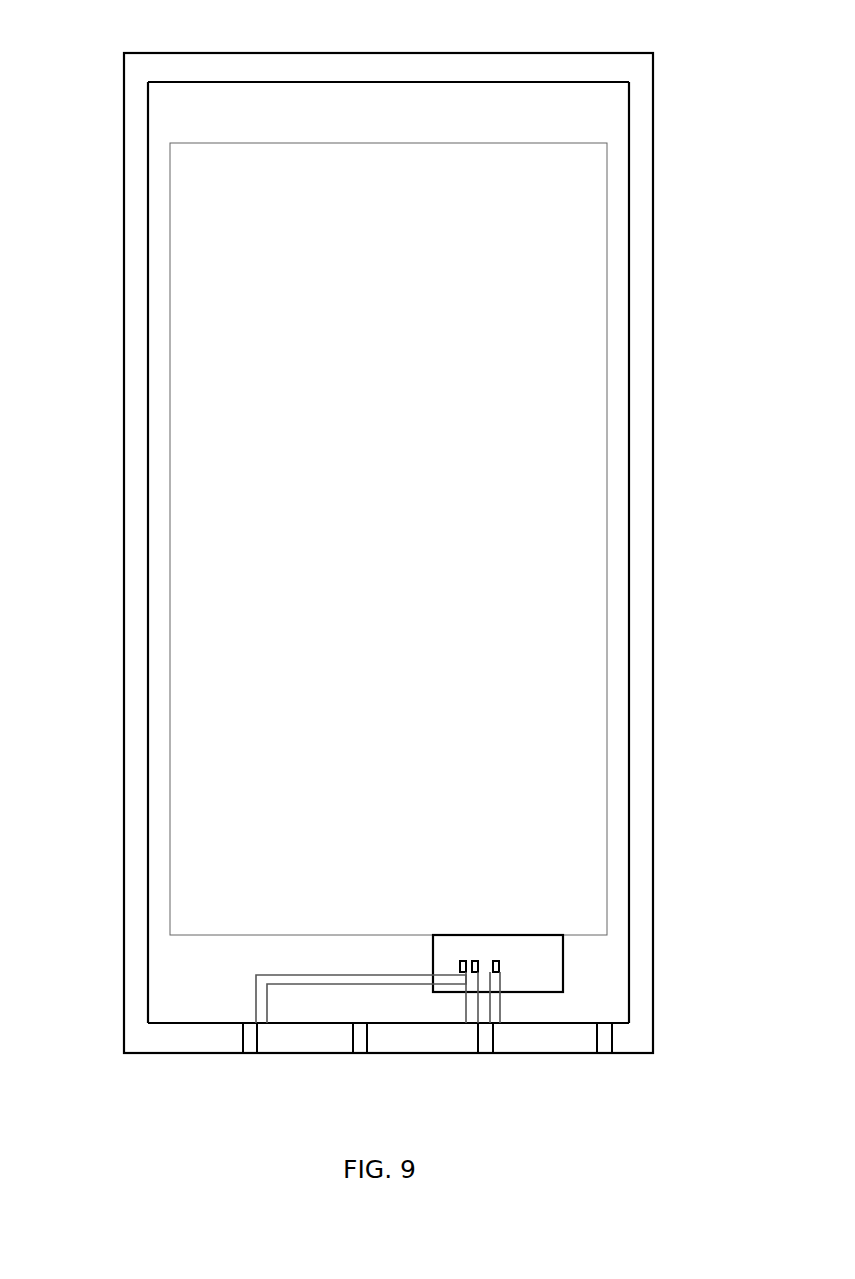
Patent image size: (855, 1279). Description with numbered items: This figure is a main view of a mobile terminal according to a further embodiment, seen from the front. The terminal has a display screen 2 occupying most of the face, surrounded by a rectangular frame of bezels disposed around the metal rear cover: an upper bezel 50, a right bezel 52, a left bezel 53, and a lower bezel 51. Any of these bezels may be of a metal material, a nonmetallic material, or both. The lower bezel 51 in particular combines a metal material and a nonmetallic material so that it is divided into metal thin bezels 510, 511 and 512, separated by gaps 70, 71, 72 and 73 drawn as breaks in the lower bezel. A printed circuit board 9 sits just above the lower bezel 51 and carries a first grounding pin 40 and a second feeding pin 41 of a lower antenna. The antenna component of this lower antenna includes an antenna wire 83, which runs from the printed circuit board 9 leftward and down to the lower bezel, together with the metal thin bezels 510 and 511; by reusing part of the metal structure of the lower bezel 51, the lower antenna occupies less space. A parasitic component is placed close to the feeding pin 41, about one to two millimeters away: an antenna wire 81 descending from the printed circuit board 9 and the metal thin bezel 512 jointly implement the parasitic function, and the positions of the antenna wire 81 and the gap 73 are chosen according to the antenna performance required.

The display screen 2 is at (228, 351).
The printed circuit board 9 is at (524, 988).
The first grounding pin 40 is at (463, 961).
The second feeding pin 41 is at (476, 961).
The bezel 50 is at (232, 53).
The lower bezel 51 is at (182, 1054).
The bezel 52 is at (653, 774).
The bezel 53 is at (124, 440).
The first gap 70 is at (258, 1053).
The second gap 71 is at (360, 1053).
The third gap 72 is at (483, 1053).
The gap 73 is at (607, 1045).
The antenna wire 81 is at (497, 990).
The antenna wire 83 is at (300, 974).
The metal thin bezel 510 is at (328, 1040).
The metal thin bezel 511 is at (452, 1045).
The metal thin bezel 512 is at (577, 1045).